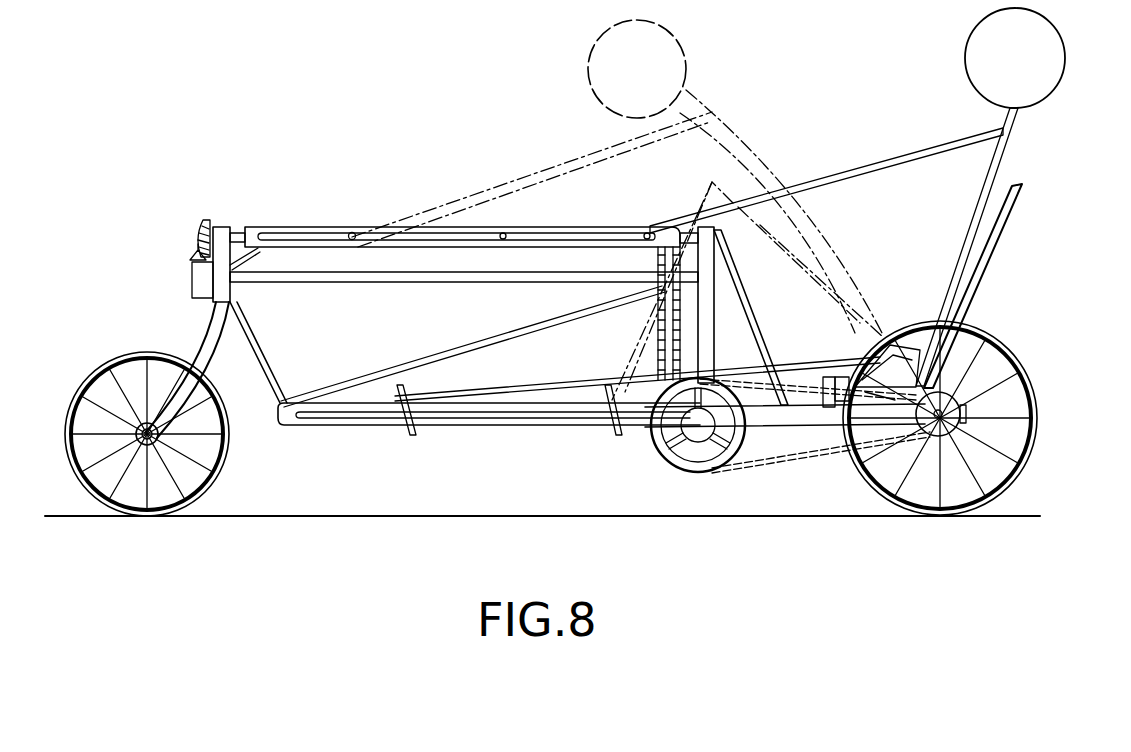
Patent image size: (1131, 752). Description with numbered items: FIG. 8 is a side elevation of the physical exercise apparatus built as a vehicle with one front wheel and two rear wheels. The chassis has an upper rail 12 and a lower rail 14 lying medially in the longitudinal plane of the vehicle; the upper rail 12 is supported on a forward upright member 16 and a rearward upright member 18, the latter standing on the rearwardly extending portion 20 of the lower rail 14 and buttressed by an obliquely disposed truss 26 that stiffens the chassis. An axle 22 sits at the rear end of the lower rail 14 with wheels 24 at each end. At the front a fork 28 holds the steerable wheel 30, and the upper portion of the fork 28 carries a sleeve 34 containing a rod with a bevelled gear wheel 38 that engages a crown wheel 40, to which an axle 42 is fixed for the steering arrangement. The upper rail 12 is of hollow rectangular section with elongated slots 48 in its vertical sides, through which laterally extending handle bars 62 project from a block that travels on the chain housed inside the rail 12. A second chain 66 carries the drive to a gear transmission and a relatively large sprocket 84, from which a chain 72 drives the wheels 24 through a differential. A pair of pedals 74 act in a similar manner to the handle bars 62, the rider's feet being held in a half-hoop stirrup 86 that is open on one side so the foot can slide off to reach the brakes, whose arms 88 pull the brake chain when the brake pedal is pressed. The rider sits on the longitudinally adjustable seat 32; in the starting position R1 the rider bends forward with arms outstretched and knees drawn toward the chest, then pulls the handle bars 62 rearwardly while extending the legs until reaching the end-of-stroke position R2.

The upper rail 12 is at (565, 228).
The lower rail 14 is at (480, 428).
The forward upright member 16 is at (268, 352).
The rearward upright member 18 is at (716, 330).
The rearwardly extending portion of lower rail 20 is at (766, 440).
The axle 22 is at (945, 424).
The wheels 24 is at (1003, 376).
The truss 26 is at (750, 303).
The fork 28 is at (208, 328).
The steerable wheel 30 is at (100, 380).
The adjustable seat 32 is at (998, 234).
The sleeve 34 is at (194, 280).
The bevelled gear wheel 38 is at (195, 255).
The crown wheel 40 is at (204, 226).
The axle 42 is at (245, 230).
The elongated slots 48 is at (505, 232).
The handle bars 62 is at (352, 232).
The second chain 66 is at (656, 330).
The chain 72 is at (820, 455).
The pedals 74 is at (400, 432).
The relatively large sprocket 84 is at (688, 470).
The stirrup 86 is at (358, 284).
The arms 88 is at (425, 356).
The starting position of rider R1 is at (686, 50).
The end-of-stroke position of rider R2 is at (1060, 50).